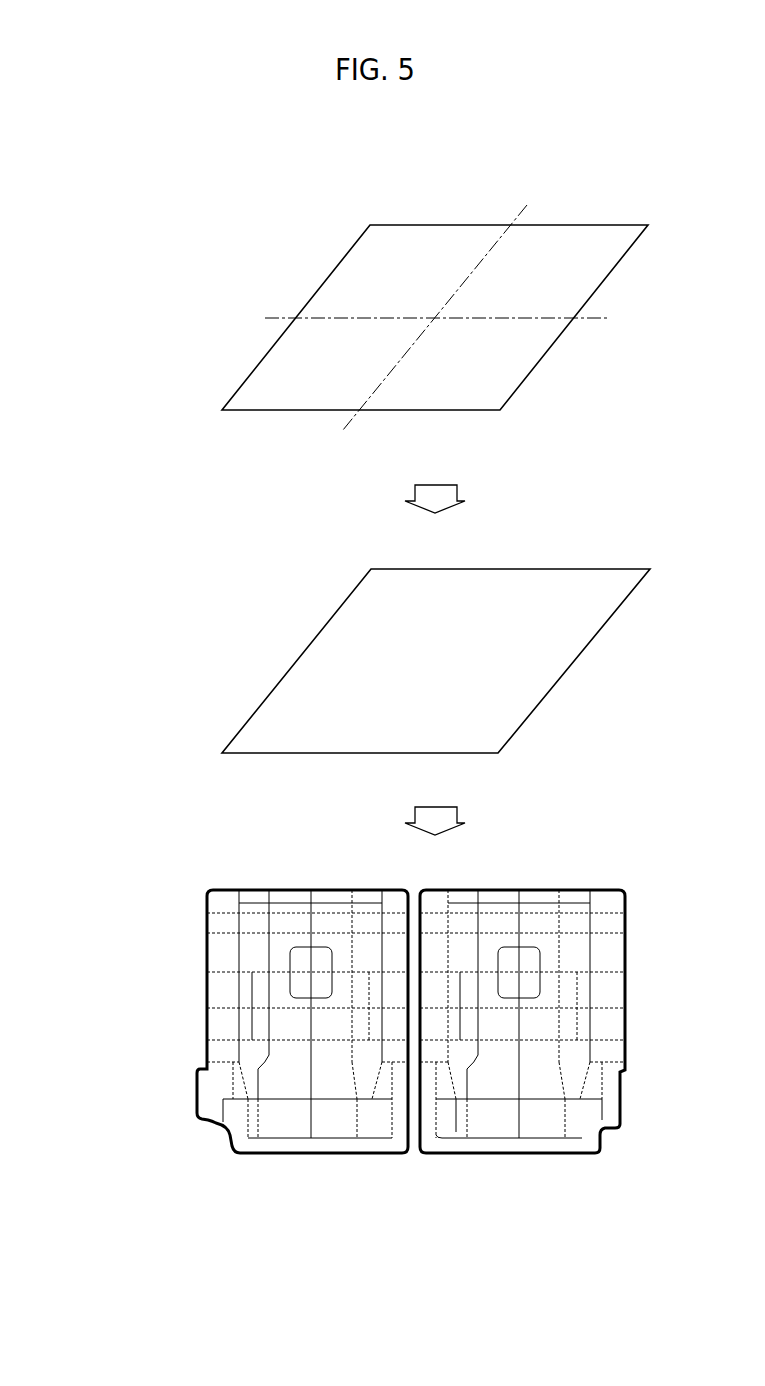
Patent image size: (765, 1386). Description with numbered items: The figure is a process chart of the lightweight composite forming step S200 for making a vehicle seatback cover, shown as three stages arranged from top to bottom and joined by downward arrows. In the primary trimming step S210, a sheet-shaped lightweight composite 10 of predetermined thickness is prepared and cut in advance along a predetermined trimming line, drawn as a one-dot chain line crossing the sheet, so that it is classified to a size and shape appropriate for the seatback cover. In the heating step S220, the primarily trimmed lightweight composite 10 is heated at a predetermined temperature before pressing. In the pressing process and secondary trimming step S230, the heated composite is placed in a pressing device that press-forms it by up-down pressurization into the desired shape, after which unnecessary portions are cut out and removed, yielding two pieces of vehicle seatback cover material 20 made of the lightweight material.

The lightweight composite 10 is at (612, 276).
The vehicle seatback cover material 20 is at (320, 1155).
The lightweight composite forming step S200 is at (127, 187).
The primary trimming step S210 is at (180, 313).
The heating step S220 is at (180, 639).
The pressing process and secondary trimming step S230 is at (180, 1004).